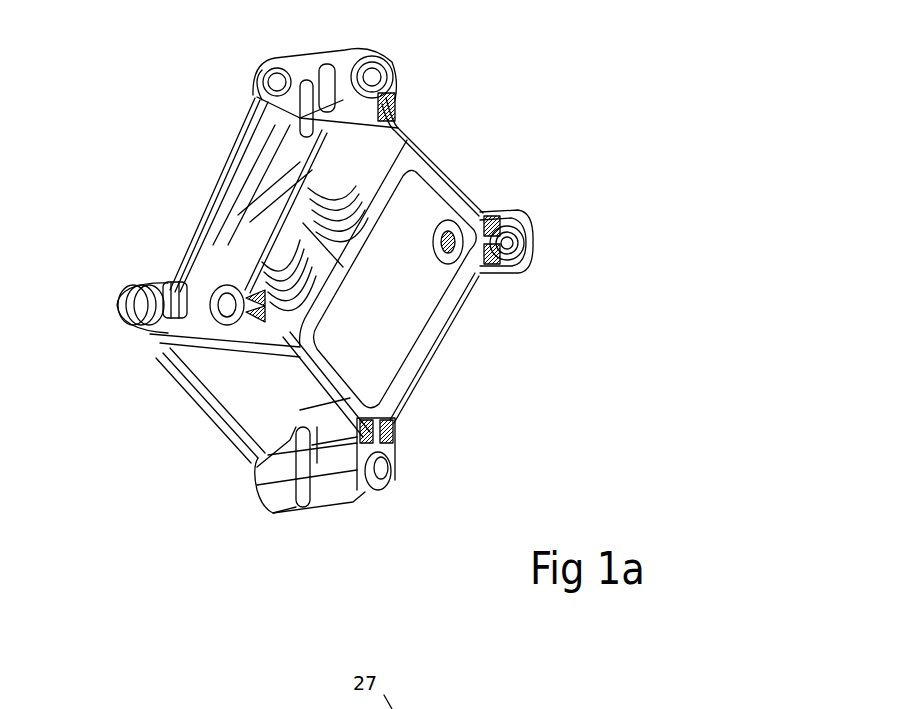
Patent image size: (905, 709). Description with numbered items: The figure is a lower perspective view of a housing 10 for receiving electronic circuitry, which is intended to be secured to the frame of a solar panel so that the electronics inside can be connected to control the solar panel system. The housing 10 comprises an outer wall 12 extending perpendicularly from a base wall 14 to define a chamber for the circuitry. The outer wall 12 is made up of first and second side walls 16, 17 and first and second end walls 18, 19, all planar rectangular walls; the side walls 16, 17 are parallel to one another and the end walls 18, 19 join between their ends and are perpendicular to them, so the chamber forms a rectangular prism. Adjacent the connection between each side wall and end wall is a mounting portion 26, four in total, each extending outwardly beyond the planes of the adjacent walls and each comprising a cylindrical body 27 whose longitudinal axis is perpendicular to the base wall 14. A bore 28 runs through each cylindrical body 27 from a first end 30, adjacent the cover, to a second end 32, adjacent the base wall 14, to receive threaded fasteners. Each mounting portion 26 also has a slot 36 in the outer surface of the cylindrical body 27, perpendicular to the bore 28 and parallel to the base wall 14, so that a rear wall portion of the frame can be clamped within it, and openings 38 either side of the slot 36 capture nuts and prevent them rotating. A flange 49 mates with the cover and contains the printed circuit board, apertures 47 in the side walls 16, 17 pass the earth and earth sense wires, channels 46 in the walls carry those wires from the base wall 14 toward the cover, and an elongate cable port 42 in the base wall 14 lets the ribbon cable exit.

The housing 10 is at (604, 197).
The outer wall 12 is at (238, 408).
The base wall 14 is at (410, 212).
The first side wall 16 is at (257, 193).
The second side wall 17 is at (427, 368).
The first end wall 18 is at (240, 373).
The second end wall 19 is at (430, 155).
The mounting portion 26 is at (267, 88).
The cylindrical body 27 is at (383, 58).
The bore 28 is at (513, 238).
The first end 30 is at (285, 491).
The second end 32 is at (403, 463).
The slot 36 is at (307, 92).
The opening 38 is at (183, 305).
The elongate cable port 42 is at (327, 185).
The channel 46 is at (262, 222).
The aperture 47 is at (270, 225).
The flange 49 is at (253, 170).